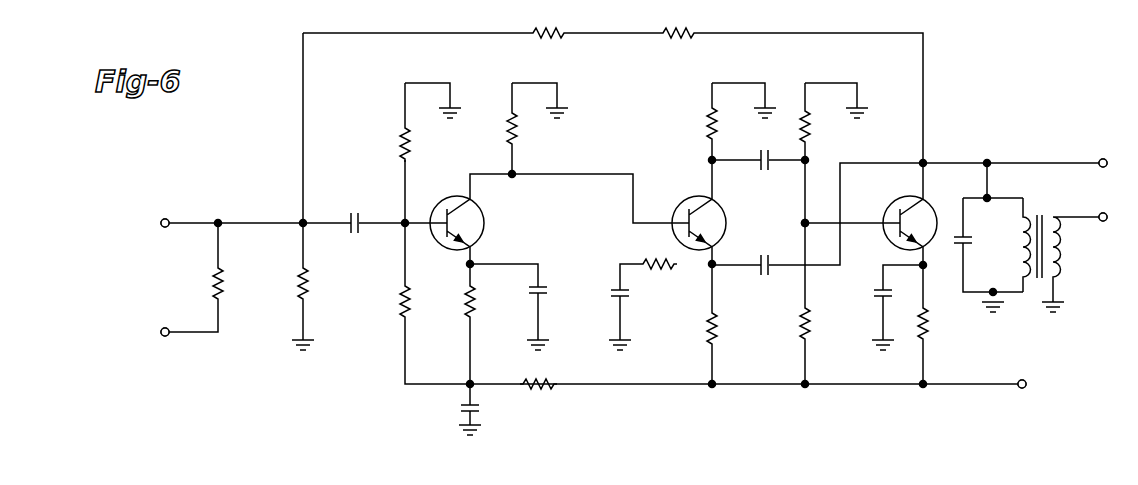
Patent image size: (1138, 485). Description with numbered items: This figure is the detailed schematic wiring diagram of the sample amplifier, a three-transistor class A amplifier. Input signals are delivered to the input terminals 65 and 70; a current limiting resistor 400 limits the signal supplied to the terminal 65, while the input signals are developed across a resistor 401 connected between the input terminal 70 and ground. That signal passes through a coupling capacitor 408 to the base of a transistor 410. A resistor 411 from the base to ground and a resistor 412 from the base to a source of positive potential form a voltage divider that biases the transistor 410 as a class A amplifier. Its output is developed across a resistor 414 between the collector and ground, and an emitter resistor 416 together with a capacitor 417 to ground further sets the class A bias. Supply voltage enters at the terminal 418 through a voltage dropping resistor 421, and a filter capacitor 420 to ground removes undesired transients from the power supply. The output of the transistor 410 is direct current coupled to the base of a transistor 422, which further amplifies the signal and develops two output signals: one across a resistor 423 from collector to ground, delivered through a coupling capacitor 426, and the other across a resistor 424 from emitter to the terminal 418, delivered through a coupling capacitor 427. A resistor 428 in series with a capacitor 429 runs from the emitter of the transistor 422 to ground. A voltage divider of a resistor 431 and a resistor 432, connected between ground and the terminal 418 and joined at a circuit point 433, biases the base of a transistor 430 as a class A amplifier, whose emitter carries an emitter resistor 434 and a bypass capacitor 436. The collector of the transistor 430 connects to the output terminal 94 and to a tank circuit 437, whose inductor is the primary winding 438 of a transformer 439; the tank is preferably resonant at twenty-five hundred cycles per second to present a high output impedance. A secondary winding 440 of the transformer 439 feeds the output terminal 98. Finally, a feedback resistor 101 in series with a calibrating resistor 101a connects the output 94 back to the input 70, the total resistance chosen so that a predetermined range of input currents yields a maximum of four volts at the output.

The input terminal 65 is at (168, 326).
The input terminal 70 is at (170, 218).
The output terminal 94 is at (1103, 158).
The output terminal 98 is at (1104, 212).
The feedback resistor 101 is at (545, 38).
The calibrating resistor 101a is at (675, 38).
The current limiting resistor 400 is at (211, 278).
The resistor 401 is at (297, 284).
The coupling capacitor 408 is at (364, 218).
The transistor 410 is at (487, 219).
The resistor 411 is at (397, 138).
The resistor 412 is at (400, 299).
The resistor 414 is at (506, 138).
The emitter resistor 416 is at (468, 300).
The capacitor 417 is at (543, 290).
The terminal 418 is at (958, 382).
The filter capacitor 420 is at (465, 404).
The voltage dropping resistor 421 is at (537, 389).
The transistor 422 is at (693, 200).
The resistor 423 is at (708, 123).
The resistor 424 is at (708, 340).
The coupling capacitor 426 is at (764, 164).
The coupling capacitor 427 is at (758, 272).
The resistor 428 is at (645, 257).
The capacitor 429 is at (622, 297).
The transistor 430 is at (894, 200).
The resistor 431 is at (810, 135).
The resistor 432 is at (801, 328).
The junction 433 is at (800, 228).
The emitter resistor 434 is at (928, 330).
The bypass capacitor 436 is at (882, 302).
The tank circuit 437 is at (994, 226).
The primary winding 438 is at (1025, 250).
The transformer 439 is at (1039, 290).
The secondary winding 440 is at (1062, 268).